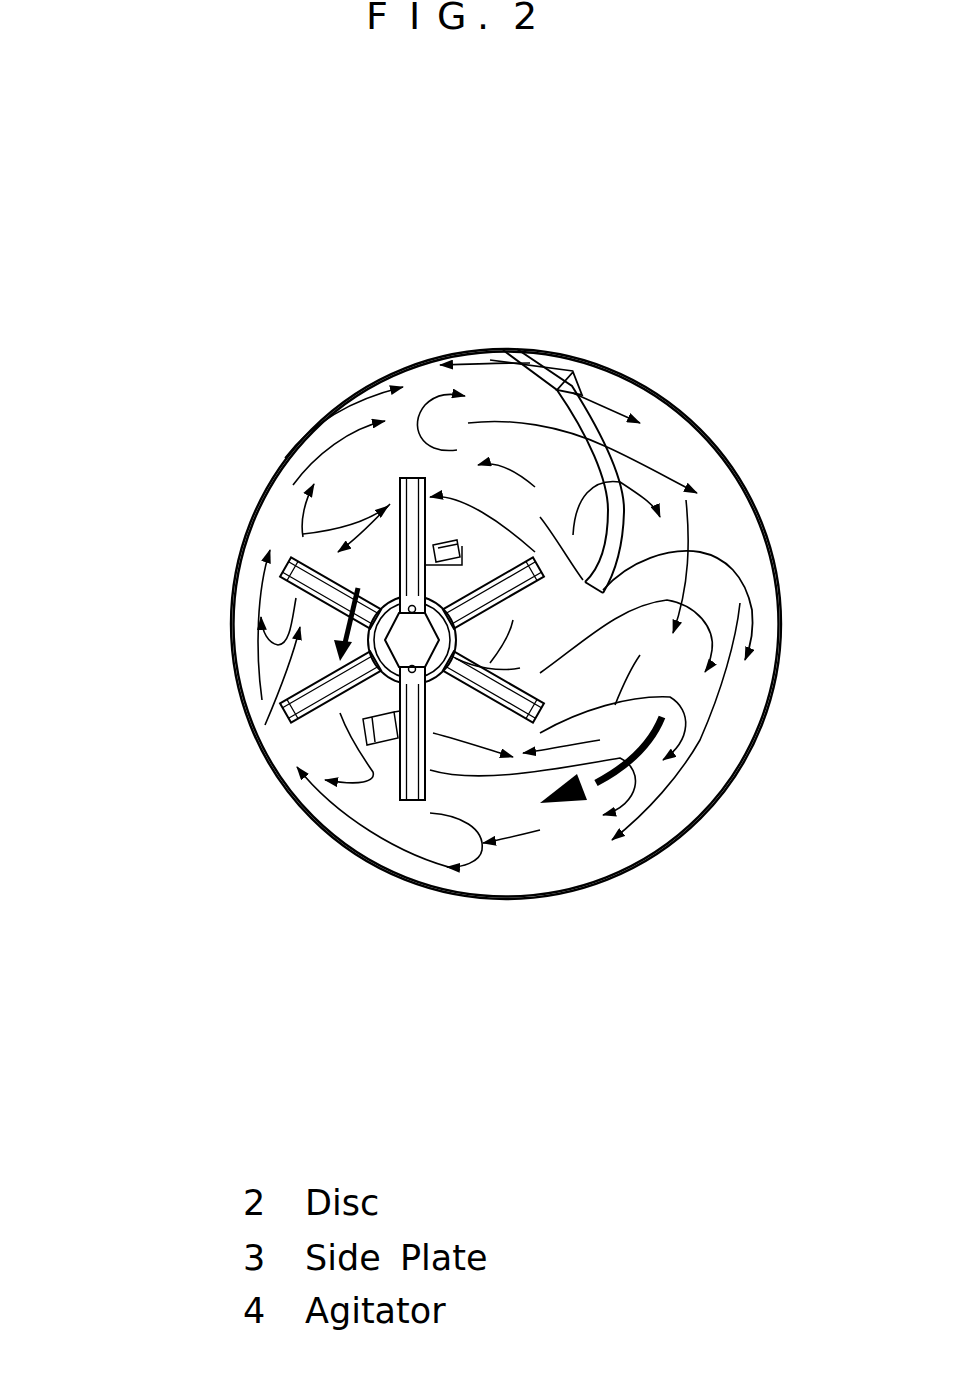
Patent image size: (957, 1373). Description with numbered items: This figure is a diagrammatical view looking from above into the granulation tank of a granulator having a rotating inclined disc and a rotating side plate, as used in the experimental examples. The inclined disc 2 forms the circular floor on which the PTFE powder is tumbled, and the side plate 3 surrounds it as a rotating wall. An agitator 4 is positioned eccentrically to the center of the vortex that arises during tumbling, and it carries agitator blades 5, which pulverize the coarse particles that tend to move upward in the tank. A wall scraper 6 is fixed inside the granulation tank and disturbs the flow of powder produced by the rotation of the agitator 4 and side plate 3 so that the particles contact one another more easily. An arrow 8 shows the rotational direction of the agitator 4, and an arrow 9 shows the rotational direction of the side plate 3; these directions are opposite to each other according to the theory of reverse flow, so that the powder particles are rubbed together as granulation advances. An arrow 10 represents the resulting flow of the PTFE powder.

The inclined disc 2 is at (543, 870).
The side plate 3 is at (757, 738).
The agitator 4 is at (305, 635).
The agitator blades 5 is at (407, 776).
The wall scraper 6 is at (613, 553).
The arrow representing rotational direction of the agitator 8 is at (337, 617).
The arrow representing rotational direction of the side plate 9 is at (640, 753).
The arrow representing the flow of the PTFE powder 10 is at (653, 457).